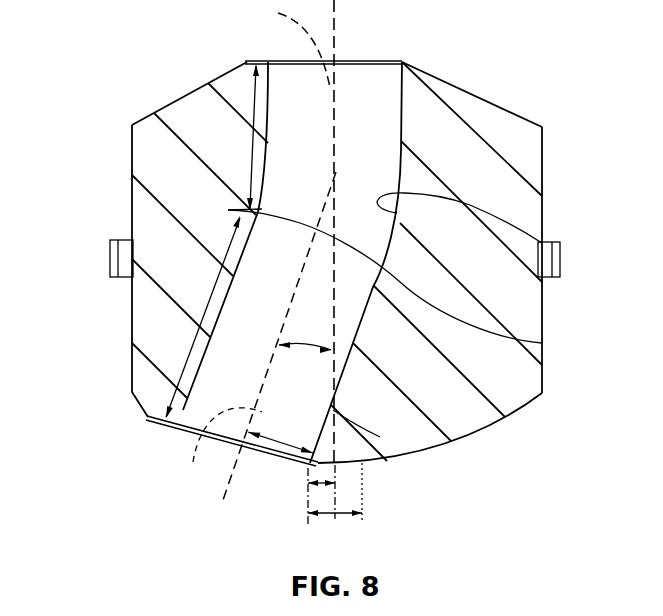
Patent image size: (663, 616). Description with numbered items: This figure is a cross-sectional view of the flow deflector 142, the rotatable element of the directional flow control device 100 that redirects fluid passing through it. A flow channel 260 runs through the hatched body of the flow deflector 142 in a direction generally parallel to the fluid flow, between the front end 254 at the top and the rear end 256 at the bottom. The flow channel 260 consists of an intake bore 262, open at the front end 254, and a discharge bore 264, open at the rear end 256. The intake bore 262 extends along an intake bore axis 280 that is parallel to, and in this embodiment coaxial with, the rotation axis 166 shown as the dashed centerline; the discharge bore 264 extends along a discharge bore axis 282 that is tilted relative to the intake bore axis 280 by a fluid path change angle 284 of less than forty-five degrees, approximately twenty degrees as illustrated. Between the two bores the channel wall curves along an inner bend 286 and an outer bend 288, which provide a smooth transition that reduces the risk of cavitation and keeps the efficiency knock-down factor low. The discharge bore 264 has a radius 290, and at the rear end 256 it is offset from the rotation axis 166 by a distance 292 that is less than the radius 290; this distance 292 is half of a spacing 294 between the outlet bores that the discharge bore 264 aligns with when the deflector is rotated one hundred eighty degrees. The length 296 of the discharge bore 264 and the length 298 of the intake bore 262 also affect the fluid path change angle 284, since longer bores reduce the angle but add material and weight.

The directional flow control device 100 is at (536, 53).
The flow deflector 142 is at (517, 173).
The rotation axis 166 is at (337, 32).
The front end 254 is at (405, 62).
The rear end 256 is at (387, 463).
The flow channel 260 is at (290, 88).
The intake bore 262 is at (378, 97).
The discharge bore 264 is at (185, 427).
The intake bore axis 280 is at (280, 46).
The discharge bore axis 282 is at (253, 336).
The fluid path change angle 284 is at (380, 437).
The inner bend 286 is at (542, 343).
The outer bend 288 is at (542, 243).
The radius 290 is at (282, 447).
The distance 292 is at (312, 476).
The spacing 294 is at (340, 520).
The length of the discharge bore 296 is at (185, 353).
The length of the intake bore 298 is at (253, 97).